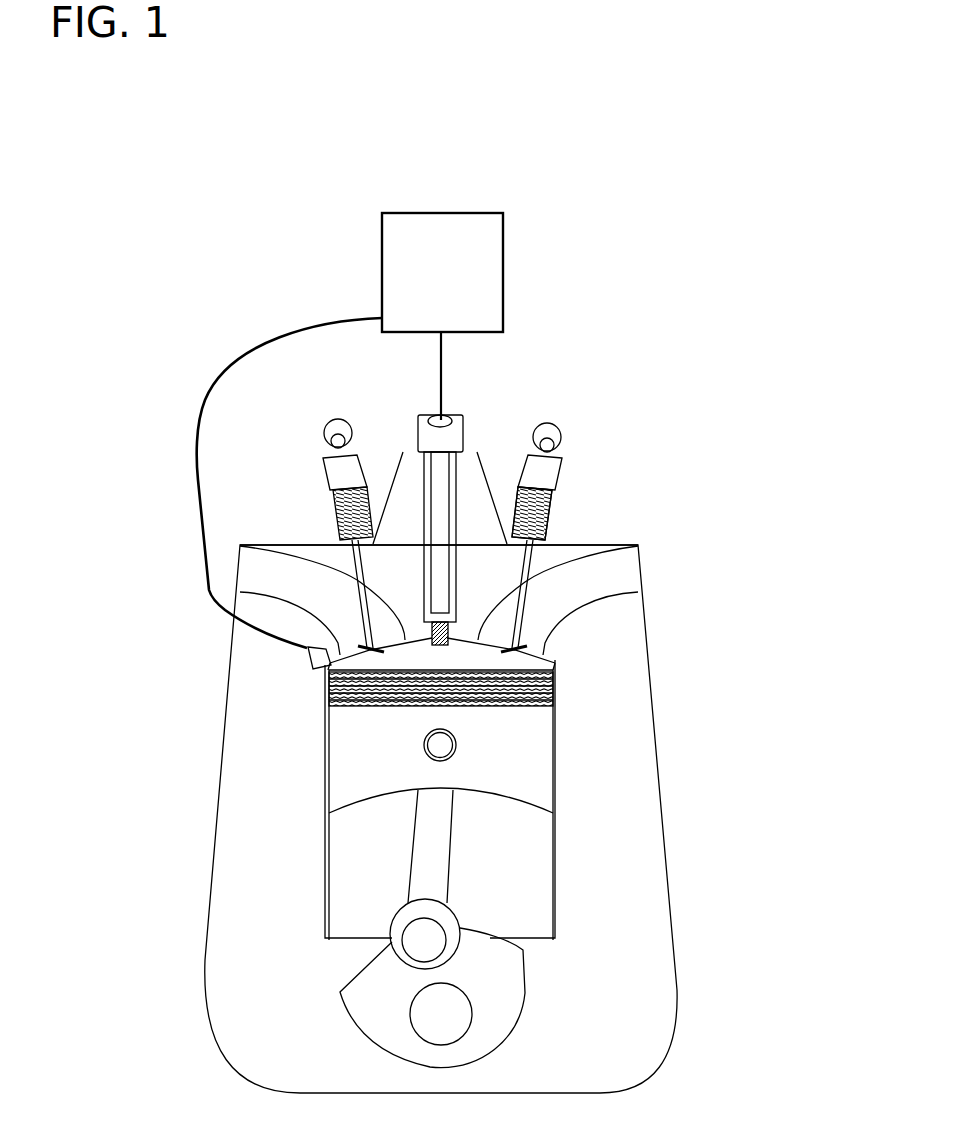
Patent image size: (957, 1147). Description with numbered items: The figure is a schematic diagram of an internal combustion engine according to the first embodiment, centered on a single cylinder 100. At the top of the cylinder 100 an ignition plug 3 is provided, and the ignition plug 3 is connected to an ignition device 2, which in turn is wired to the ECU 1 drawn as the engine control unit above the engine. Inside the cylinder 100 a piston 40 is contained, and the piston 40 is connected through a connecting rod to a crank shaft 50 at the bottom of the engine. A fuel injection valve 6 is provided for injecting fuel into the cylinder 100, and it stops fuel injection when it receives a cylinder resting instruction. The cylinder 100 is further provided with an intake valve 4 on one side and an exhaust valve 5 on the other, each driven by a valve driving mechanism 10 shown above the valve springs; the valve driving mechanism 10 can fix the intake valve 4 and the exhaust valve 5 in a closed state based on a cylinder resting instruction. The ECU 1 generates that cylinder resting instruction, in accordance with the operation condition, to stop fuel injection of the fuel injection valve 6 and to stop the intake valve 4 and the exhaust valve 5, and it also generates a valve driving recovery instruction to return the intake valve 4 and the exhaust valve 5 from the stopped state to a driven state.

The ECU 1 is at (503, 270).
The ignition device 2 is at (480, 420).
The ignition plug 3 is at (450, 636).
The intake valve 4 is at (333, 503).
The exhaust valve 5 is at (592, 490).
The valve driving mechanism 10 is at (330, 420).
The fuel injection valve 6 is at (311, 668).
The piston 40 is at (502, 752).
The crank shaft 50 is at (492, 998).
The cylinder 100 is at (637, 797).